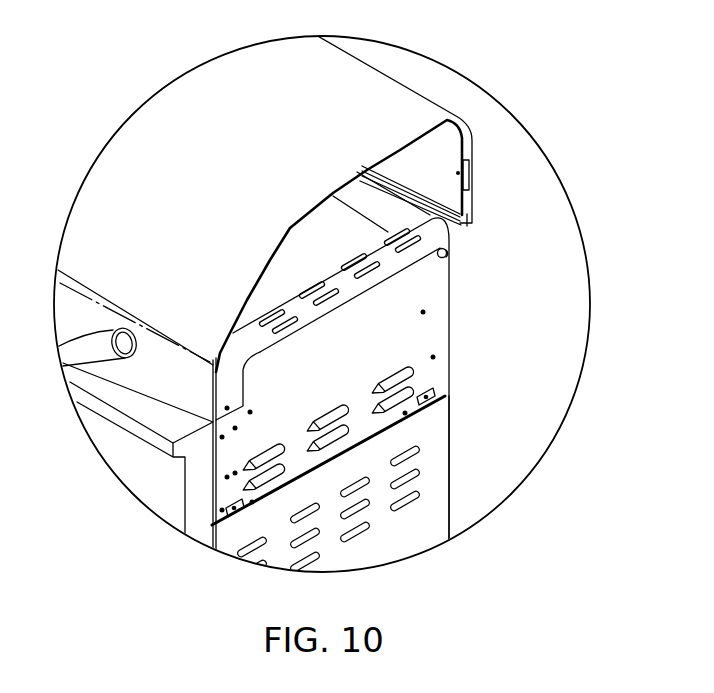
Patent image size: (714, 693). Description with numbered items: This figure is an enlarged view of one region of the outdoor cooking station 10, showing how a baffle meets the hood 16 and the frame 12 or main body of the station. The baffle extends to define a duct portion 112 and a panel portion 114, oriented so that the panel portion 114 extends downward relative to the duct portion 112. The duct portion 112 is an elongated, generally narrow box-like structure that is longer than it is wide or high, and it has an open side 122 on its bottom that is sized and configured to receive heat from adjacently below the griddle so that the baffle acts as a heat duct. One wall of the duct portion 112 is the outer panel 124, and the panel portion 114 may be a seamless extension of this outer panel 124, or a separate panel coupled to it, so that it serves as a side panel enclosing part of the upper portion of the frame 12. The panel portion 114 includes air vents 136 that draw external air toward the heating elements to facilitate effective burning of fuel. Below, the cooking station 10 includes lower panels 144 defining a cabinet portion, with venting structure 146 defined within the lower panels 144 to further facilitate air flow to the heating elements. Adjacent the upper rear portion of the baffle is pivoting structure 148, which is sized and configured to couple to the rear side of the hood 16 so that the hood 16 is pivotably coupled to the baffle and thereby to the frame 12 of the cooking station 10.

The outdoor cooking station 10 is at (544, 90).
The frame 12 is at (456, 440).
The hood 16 is at (404, 76).
The duct portion 112 is at (233, 382).
The panel portion 114 is at (426, 376).
The open side 122 is at (456, 278).
The outer panel 124 is at (410, 302).
The air vents 136 is at (267, 478).
The lower panels 144 is at (432, 512).
The venting structure 146 is at (363, 533).
The pivoting structure 148 is at (450, 255).